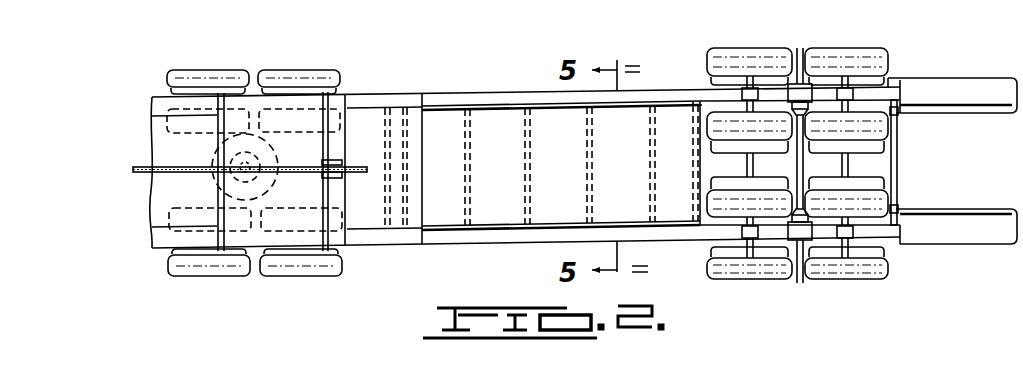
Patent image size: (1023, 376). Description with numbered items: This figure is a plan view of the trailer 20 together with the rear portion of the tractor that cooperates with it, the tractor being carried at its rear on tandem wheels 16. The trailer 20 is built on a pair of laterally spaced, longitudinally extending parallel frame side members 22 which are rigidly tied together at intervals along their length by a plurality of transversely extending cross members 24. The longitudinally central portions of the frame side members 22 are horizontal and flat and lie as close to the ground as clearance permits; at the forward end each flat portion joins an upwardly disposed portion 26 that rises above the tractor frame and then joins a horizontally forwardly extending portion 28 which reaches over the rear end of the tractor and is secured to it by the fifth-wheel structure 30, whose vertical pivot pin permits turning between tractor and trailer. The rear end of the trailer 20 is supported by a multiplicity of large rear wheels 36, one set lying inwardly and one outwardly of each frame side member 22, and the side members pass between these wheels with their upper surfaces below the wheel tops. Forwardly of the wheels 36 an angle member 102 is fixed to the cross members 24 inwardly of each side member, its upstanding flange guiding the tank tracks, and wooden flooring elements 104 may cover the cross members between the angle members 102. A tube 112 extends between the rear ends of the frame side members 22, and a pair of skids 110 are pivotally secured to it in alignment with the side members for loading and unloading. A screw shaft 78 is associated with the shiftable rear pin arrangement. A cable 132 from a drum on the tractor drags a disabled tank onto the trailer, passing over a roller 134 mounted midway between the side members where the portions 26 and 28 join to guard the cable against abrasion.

The tandem wheels 16 is at (277, 70).
The trailer 20 is at (467, 88).
The frame side members 22 is at (522, 93).
The cross members 24 is at (524, 189).
The upwardly disposed portion 26 is at (372, 93).
The horizontally forwardly extending portion 28 is at (284, 97).
The fifth-wheel structure 30 is at (213, 187).
The rear wheels 36 is at (818, 48).
The screw shaft 78 is at (802, 280).
The angle member 102 is at (433, 113).
The wooden flooring elements 104 is at (570, 180).
The skids 110 is at (947, 79).
The tube 112 is at (897, 189).
The cable 132 is at (138, 175).
The roller 134 is at (343, 177).